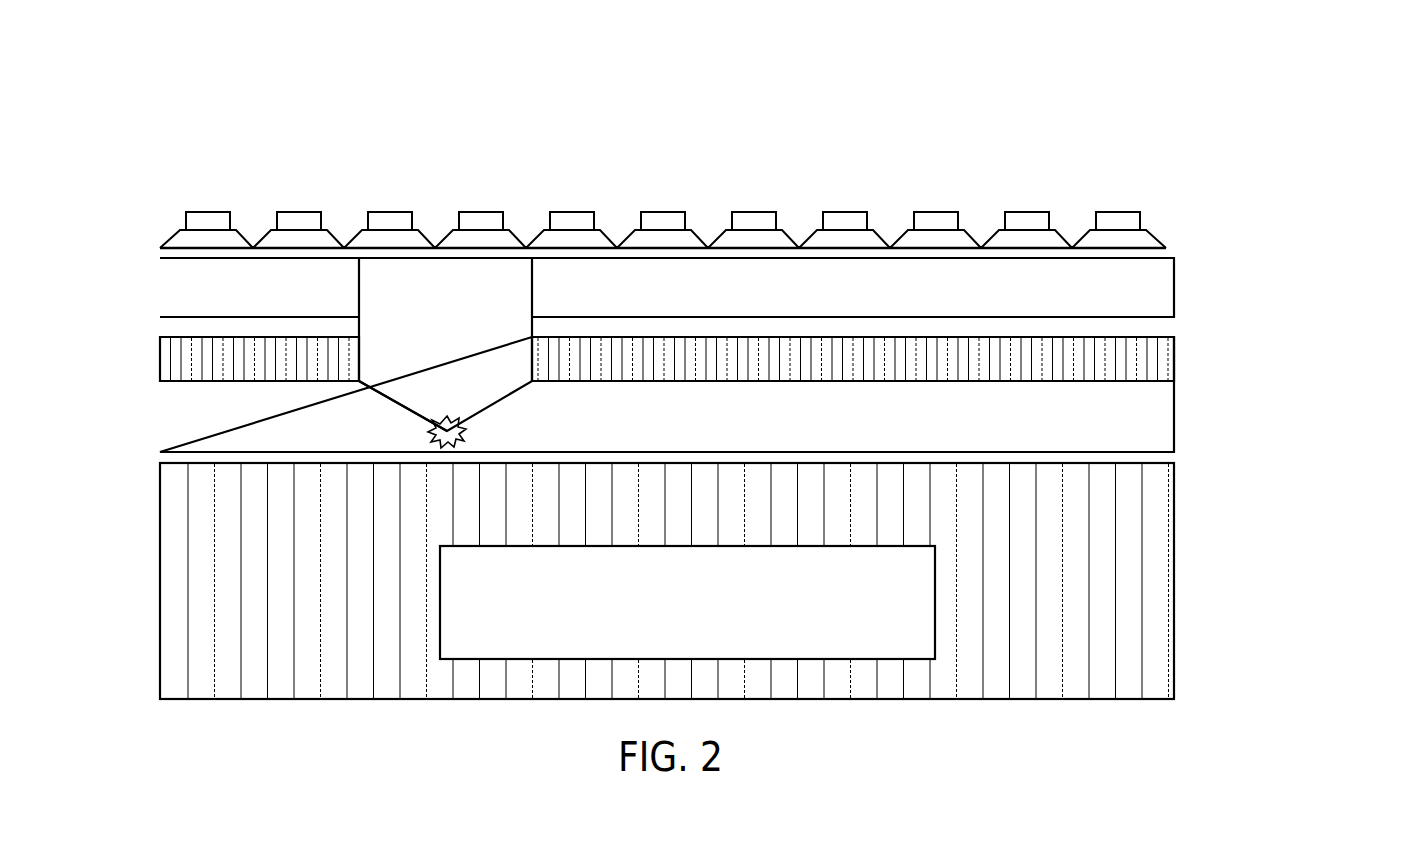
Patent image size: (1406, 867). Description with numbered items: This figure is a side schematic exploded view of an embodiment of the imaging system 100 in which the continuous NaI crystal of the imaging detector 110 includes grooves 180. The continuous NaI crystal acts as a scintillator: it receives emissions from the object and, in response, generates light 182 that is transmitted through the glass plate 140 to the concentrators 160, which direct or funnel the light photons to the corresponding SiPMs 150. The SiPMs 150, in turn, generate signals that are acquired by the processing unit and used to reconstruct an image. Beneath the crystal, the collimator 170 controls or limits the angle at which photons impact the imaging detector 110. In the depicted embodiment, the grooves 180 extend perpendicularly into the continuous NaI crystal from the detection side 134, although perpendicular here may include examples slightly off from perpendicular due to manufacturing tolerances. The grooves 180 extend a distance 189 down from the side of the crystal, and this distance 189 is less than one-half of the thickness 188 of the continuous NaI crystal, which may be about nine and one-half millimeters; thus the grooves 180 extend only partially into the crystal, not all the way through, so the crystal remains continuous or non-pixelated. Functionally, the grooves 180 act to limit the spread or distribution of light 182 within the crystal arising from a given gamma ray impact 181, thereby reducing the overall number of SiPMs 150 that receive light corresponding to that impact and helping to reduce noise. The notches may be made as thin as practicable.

The imaging system 100 is at (1232, 110).
The imaging detector 110 is at (127, 456).
The detection side 134 is at (1184, 330).
The glass plate 140 is at (799, 297).
The SiPMs 150 is at (1117, 210).
The concentrators 160 is at (1160, 246).
The collimator 170 is at (703, 612).
The grooves 180 is at (1142, 362).
The gamma ray impact 181 is at (418, 439).
The light 182 is at (378, 396).
The thickness 188 is at (1174, 337).
The distance 189 is at (1174, 337).